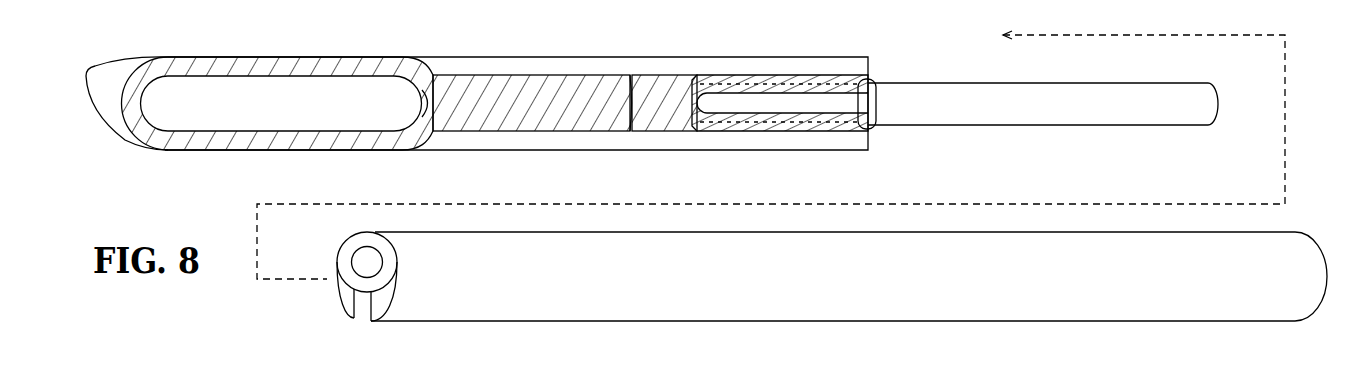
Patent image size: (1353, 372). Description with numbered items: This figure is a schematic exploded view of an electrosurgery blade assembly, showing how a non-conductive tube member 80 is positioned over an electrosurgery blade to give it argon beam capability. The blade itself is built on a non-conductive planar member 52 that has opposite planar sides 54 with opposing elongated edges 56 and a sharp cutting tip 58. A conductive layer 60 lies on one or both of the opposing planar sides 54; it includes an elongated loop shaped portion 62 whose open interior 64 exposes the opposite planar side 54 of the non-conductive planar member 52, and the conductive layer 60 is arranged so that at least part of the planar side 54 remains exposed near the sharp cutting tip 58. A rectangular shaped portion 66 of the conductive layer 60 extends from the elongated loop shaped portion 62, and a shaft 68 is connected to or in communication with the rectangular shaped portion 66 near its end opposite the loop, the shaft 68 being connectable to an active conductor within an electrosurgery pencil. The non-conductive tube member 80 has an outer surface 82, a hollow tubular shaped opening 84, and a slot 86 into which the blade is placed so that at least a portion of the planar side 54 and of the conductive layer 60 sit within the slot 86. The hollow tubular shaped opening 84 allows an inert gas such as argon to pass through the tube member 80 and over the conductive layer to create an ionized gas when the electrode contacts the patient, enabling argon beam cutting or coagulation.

The non-conductive planar member 52 is at (452, 72).
The opposite planar side 54 is at (705, 180).
The opposing elongated edge 56 is at (506, 54).
The sharp cutting tip 58 is at (86, 80).
The conductive layer 60 is at (436, 122).
The elongated loop shaped portion 62 is at (202, 143).
The open interior 64 is at (175, 100).
The rectangular shaped portion 66 is at (588, 118).
The shaft 68 is at (920, 95).
The non-conductive tube member 80 is at (643, 292).
The outer surface 82 is at (830, 274).
The hollow tubular shaped opening 84 is at (368, 260).
The slot 86 is at (363, 308).